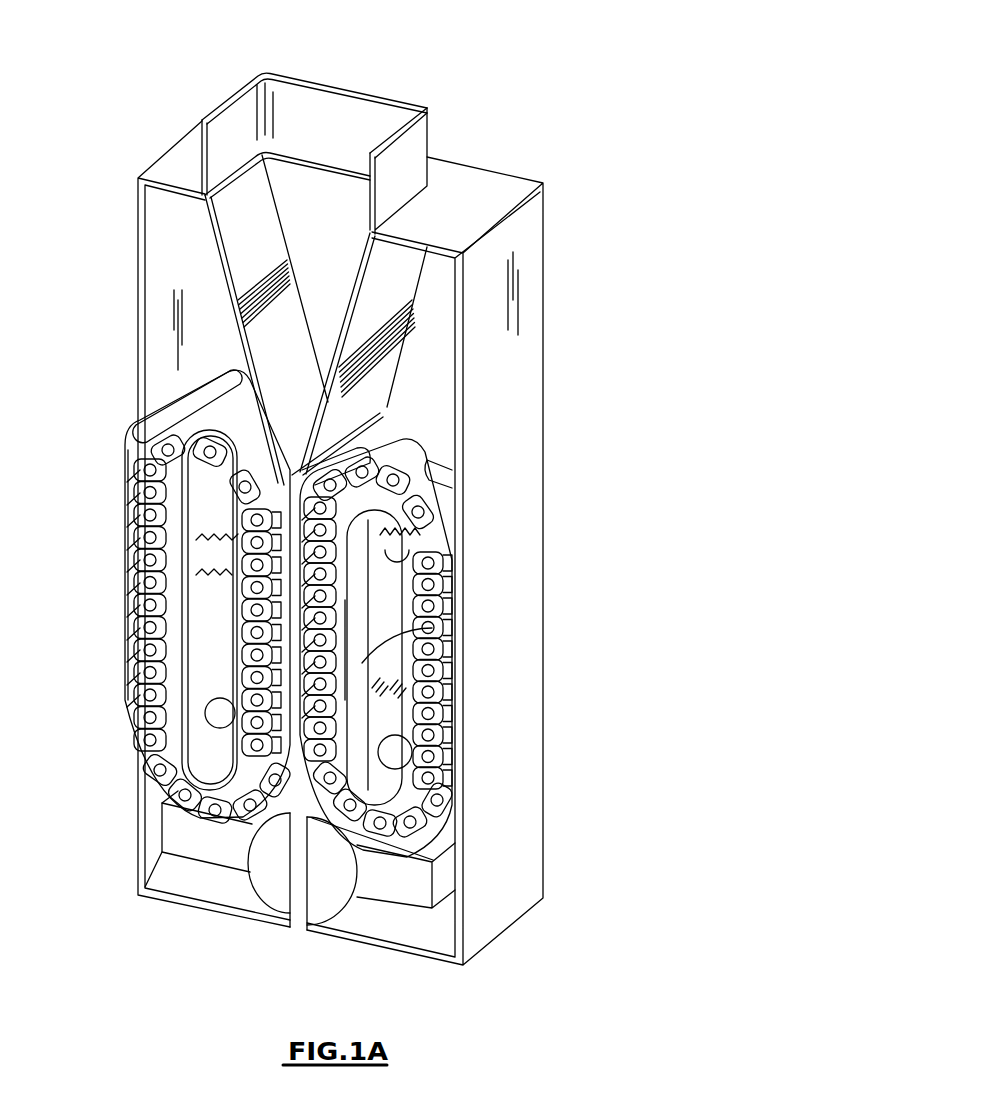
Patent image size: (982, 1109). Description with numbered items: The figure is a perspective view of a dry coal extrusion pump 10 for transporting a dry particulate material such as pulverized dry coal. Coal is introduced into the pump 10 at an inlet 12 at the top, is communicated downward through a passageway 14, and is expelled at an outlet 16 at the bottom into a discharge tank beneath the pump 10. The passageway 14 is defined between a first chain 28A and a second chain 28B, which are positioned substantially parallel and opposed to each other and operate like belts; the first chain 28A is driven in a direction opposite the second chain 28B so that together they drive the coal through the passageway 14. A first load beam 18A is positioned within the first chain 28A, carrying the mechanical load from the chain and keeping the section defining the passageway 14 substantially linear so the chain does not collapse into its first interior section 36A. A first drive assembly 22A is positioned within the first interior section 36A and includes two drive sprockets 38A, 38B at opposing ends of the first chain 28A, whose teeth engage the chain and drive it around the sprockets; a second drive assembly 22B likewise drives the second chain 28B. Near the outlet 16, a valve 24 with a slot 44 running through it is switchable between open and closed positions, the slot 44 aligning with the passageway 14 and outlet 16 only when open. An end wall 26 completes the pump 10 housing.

The dry coal extrusion pump 10 is at (577, 52).
The inlet 12 is at (356, 56).
The passageway 14 is at (297, 467).
The outlet 16 is at (300, 936).
The first load beam 18A is at (362, 663).
The first drive assembly 22A is at (414, 688).
The second drive assembly 22B is at (208, 597).
The valve 24 is at (322, 902).
The end wall 26 is at (417, 888).
The first chain 28A is at (448, 508).
The second chain 28B is at (198, 402).
The first interior section 36A is at (395, 658).
The drive sprocket 38A is at (410, 735).
The drive sprocket 38B is at (410, 552).
The slot 44 is at (273, 878).